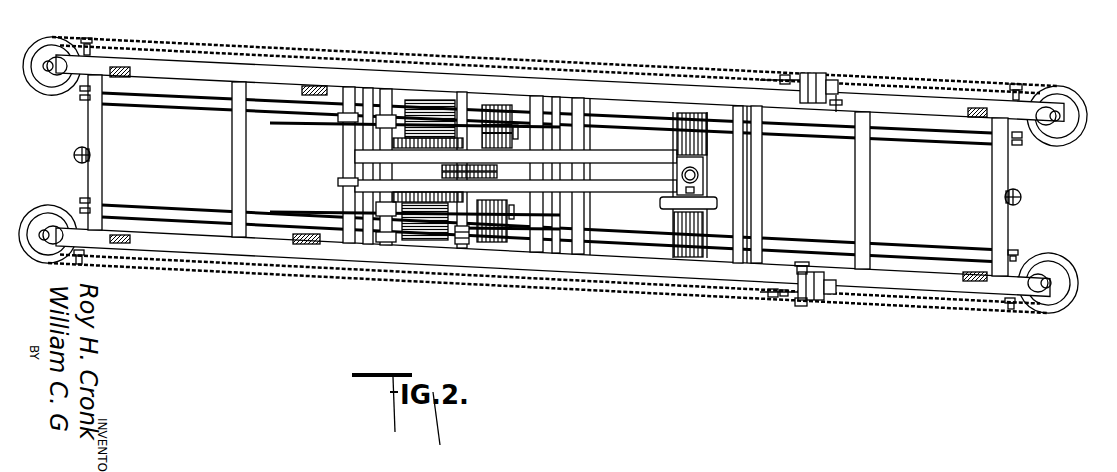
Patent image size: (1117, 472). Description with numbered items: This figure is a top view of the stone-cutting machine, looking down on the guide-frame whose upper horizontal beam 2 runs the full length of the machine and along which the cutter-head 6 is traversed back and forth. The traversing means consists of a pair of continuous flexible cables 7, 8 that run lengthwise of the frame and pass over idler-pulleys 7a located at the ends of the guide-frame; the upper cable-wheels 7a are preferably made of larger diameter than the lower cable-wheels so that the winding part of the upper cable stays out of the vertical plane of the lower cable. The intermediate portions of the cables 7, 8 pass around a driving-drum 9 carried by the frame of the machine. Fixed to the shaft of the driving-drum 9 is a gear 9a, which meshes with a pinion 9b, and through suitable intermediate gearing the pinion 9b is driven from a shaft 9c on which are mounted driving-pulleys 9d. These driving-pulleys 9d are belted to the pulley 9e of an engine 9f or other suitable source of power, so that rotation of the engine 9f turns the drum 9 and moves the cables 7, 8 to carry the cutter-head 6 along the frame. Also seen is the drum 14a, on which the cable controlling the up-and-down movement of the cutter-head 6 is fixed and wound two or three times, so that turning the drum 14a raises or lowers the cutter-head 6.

The upper horizontal beam 2 is at (257, 72).
The cutter-head 6 is at (820, 75).
The continuous flexible cable 7 is at (965, 83).
The idler-pulley 7a is at (50, 44).
The continuous flexible cable 8 is at (948, 88).
The driving-drum 9 is at (427, 107).
The gear 9a is at (397, 197).
The pinion 9b is at (464, 236).
The shaft 9c is at (500, 203).
The driving-pulleys 9d is at (498, 101).
The pulley 9e is at (682, 257).
The engine 9f is at (703, 173).
The drum 14a is at (799, 291).